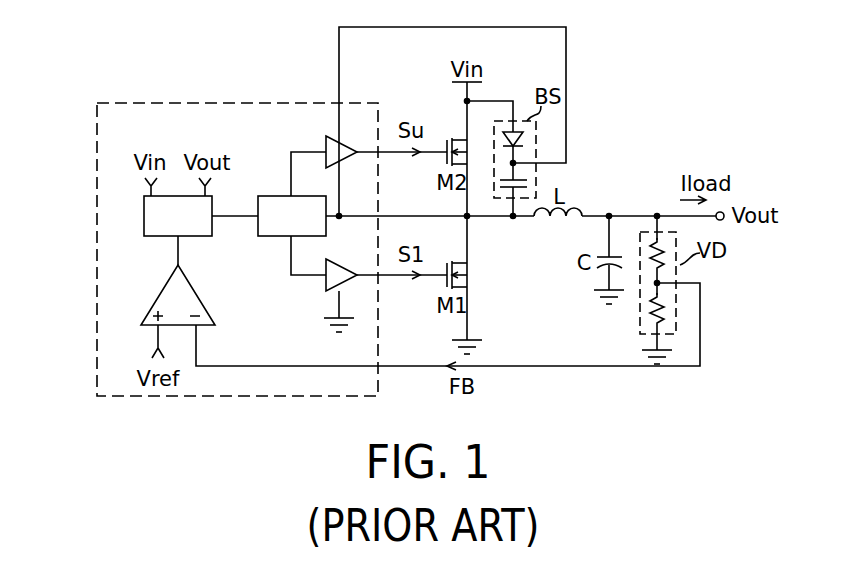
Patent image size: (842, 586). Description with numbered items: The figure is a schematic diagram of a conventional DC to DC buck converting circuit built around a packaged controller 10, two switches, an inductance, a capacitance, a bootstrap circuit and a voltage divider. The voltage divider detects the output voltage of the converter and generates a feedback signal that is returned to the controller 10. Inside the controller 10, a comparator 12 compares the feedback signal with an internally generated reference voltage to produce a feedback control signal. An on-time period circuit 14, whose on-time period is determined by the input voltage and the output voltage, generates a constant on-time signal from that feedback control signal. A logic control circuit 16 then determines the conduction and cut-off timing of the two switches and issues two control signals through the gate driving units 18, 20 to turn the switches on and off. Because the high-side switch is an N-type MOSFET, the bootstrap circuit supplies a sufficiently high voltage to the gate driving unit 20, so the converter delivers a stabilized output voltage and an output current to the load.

The controller 10 is at (97, 111).
The comparator 12 is at (158, 299).
The on-time period circuit 14 is at (165, 230).
The logic control circuit 16 is at (279, 230).
The gate driving unit 18 is at (330, 284).
The gate driving unit 20 is at (332, 146).